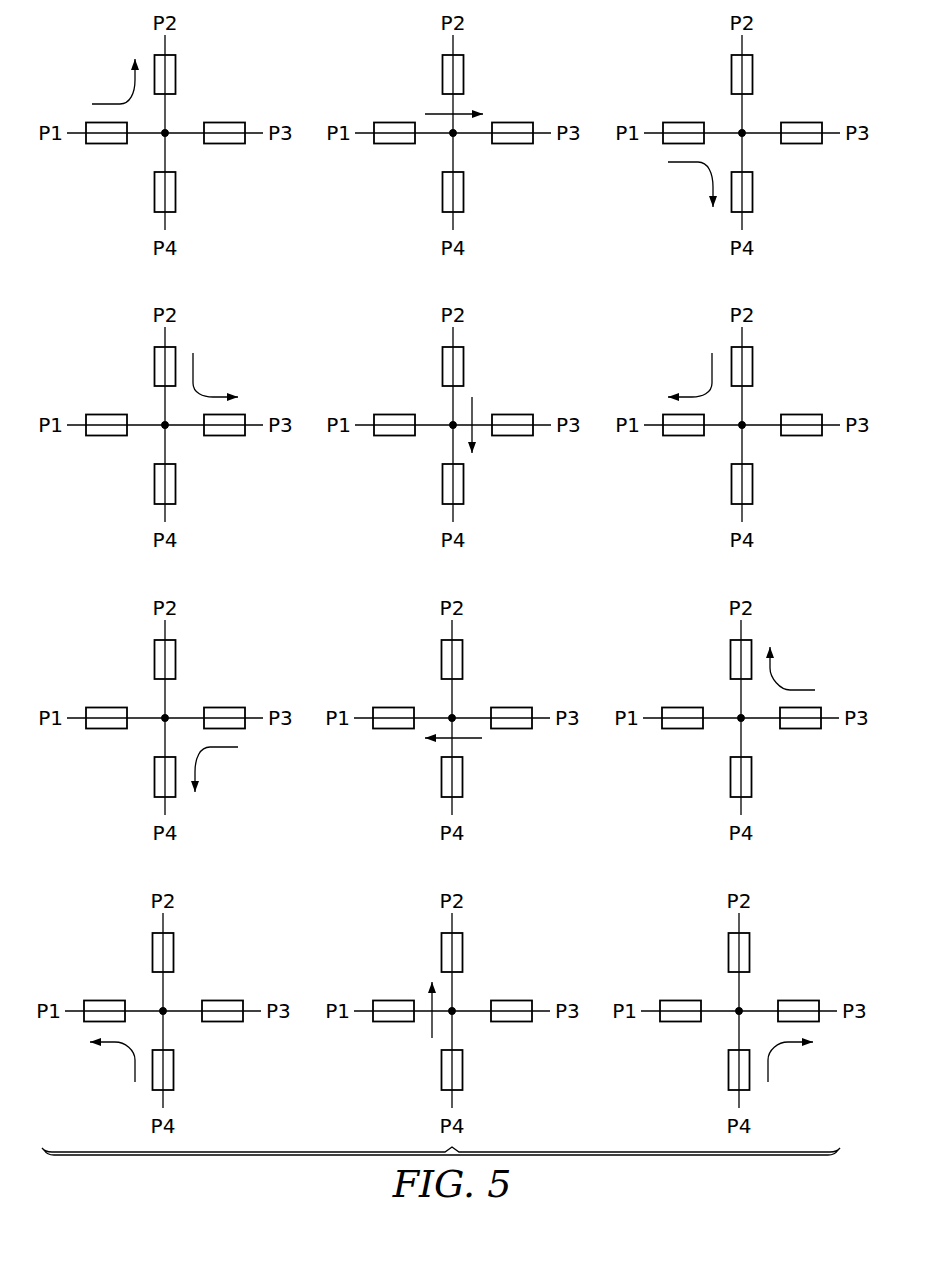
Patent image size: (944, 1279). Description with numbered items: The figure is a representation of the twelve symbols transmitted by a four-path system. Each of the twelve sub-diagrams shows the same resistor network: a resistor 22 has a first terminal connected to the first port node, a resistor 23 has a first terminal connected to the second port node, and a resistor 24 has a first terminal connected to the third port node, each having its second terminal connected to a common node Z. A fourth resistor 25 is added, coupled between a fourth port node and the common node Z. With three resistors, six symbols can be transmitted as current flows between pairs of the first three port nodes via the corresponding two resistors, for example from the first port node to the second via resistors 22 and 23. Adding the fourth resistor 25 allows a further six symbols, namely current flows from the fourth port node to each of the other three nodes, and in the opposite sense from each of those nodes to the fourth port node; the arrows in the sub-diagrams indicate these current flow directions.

The resistor 22 is at (393, 574).
The resistor 23 is at (453, 513).
The resistor 24 is at (513, 598).
The fourth resistor 25 is at (453, 634).
The common node Z is at (452, 573).